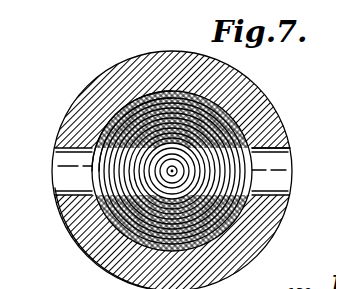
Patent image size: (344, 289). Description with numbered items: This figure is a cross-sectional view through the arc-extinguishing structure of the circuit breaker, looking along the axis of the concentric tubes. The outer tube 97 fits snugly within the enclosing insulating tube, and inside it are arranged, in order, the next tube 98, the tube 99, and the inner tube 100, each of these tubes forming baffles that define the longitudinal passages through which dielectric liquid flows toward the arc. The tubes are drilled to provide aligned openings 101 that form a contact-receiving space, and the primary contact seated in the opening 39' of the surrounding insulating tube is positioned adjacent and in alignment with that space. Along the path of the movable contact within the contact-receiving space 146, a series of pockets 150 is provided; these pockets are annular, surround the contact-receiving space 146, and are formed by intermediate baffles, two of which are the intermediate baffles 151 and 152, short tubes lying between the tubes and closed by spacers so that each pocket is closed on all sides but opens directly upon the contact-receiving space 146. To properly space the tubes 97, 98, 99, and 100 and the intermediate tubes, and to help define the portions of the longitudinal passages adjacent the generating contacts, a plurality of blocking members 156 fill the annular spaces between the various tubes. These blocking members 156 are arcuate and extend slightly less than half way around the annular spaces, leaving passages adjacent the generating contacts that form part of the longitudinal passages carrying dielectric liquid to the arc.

The outer tube 97 is at (210, 68).
The next tube 98 is at (212, 99).
The tube 99 is at (224, 113).
The inner tube 100 is at (231, 124).
The openings 101 is at (250, 177).
The opening 39' is at (292, 147).
The contact-receiving space 146 is at (45, 142).
The pockets 150 is at (82, 247).
The intermediate baffle 151 is at (104, 117).
The intermediate baffle 152 is at (141, 92).
The blocking members 156 is at (213, 232).